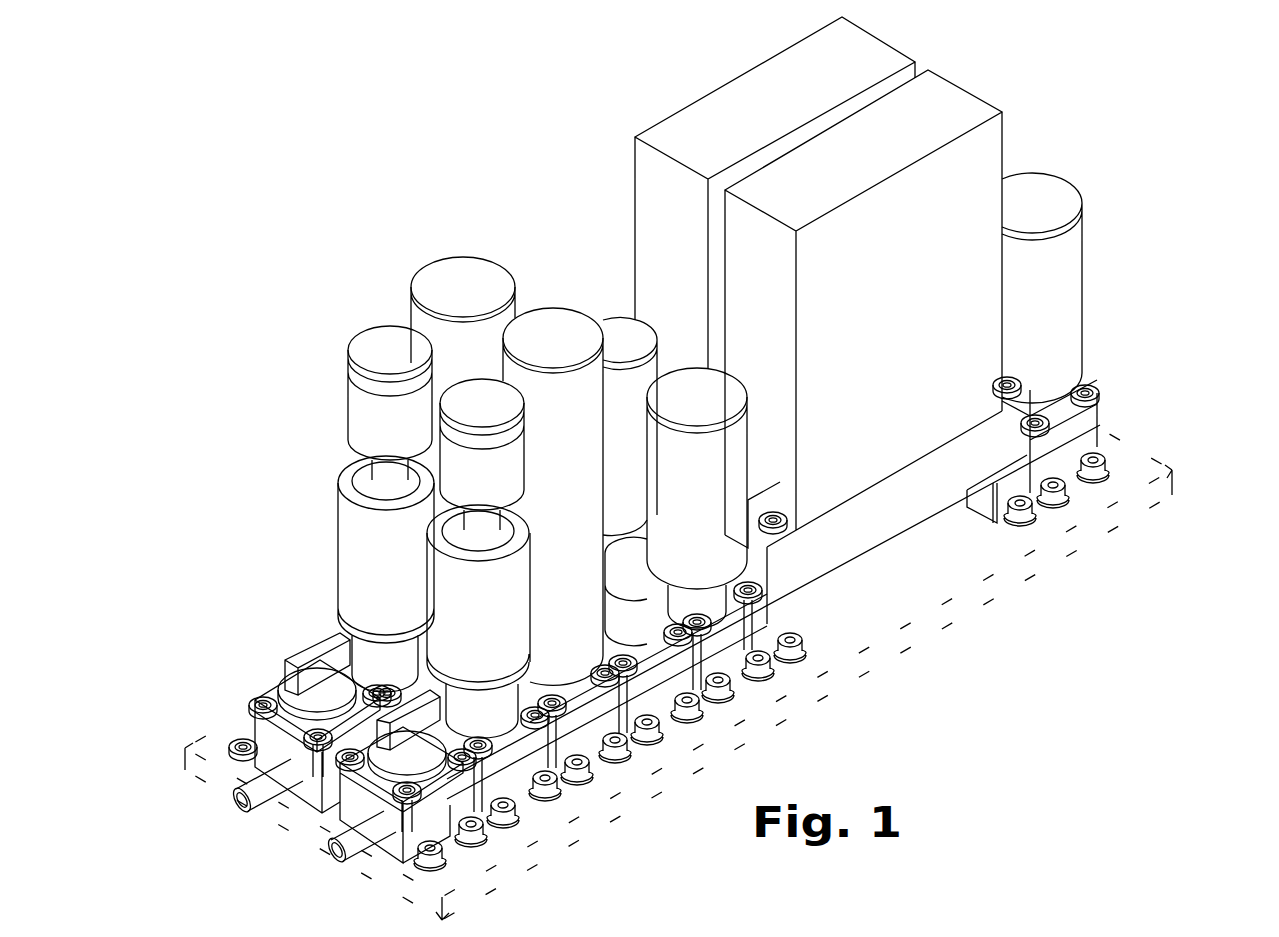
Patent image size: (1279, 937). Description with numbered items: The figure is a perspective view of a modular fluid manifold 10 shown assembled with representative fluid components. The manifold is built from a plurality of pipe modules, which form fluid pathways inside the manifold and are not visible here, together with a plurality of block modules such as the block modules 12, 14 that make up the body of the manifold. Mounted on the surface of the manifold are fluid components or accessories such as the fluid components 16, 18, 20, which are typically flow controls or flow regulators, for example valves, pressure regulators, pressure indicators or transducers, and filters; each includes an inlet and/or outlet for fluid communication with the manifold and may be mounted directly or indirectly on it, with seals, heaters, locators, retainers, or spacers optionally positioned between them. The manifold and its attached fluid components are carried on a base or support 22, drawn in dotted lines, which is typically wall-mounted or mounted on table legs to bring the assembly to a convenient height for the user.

The modular fluid manifold 10 is at (1106, 435).
The block module 12 is at (668, 697).
The block module 14 is at (533, 798).
The fluid component 16 is at (360, 335).
The fluid component 18 is at (482, 262).
The fluid component 20 is at (554, 308).
The base or support 22 is at (1167, 468).